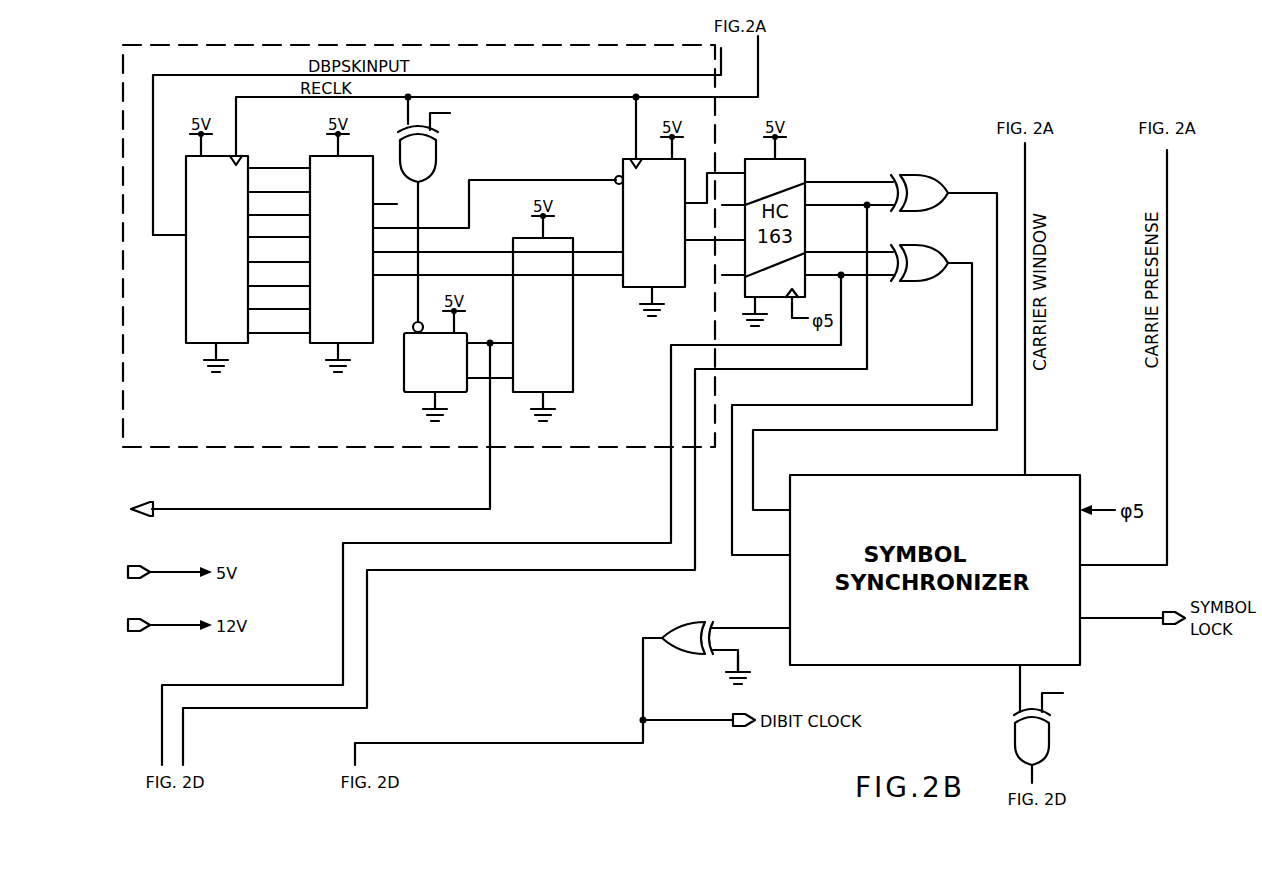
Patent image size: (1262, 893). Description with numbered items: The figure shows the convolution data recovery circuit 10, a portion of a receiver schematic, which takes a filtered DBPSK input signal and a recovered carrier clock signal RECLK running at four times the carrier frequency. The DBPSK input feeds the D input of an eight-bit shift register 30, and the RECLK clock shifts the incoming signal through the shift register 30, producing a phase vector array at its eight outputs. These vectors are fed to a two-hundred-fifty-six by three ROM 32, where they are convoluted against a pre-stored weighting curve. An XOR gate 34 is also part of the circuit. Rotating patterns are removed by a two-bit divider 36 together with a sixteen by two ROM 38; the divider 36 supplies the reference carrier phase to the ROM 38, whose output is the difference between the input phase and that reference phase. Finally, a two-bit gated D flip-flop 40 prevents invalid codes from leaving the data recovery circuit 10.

The convolution data recovery circuit 10 is at (598, 47).
The 8-bit shift register 30 is at (186, 300).
The 256×3 ROM 32 is at (311, 345).
The XOR gate 34 is at (437, 150).
The 2-bit divider 36 is at (404, 391).
The 16×2 ROM 38 is at (575, 384).
The two-bit gated "D" flip-flop 40 is at (634, 289).